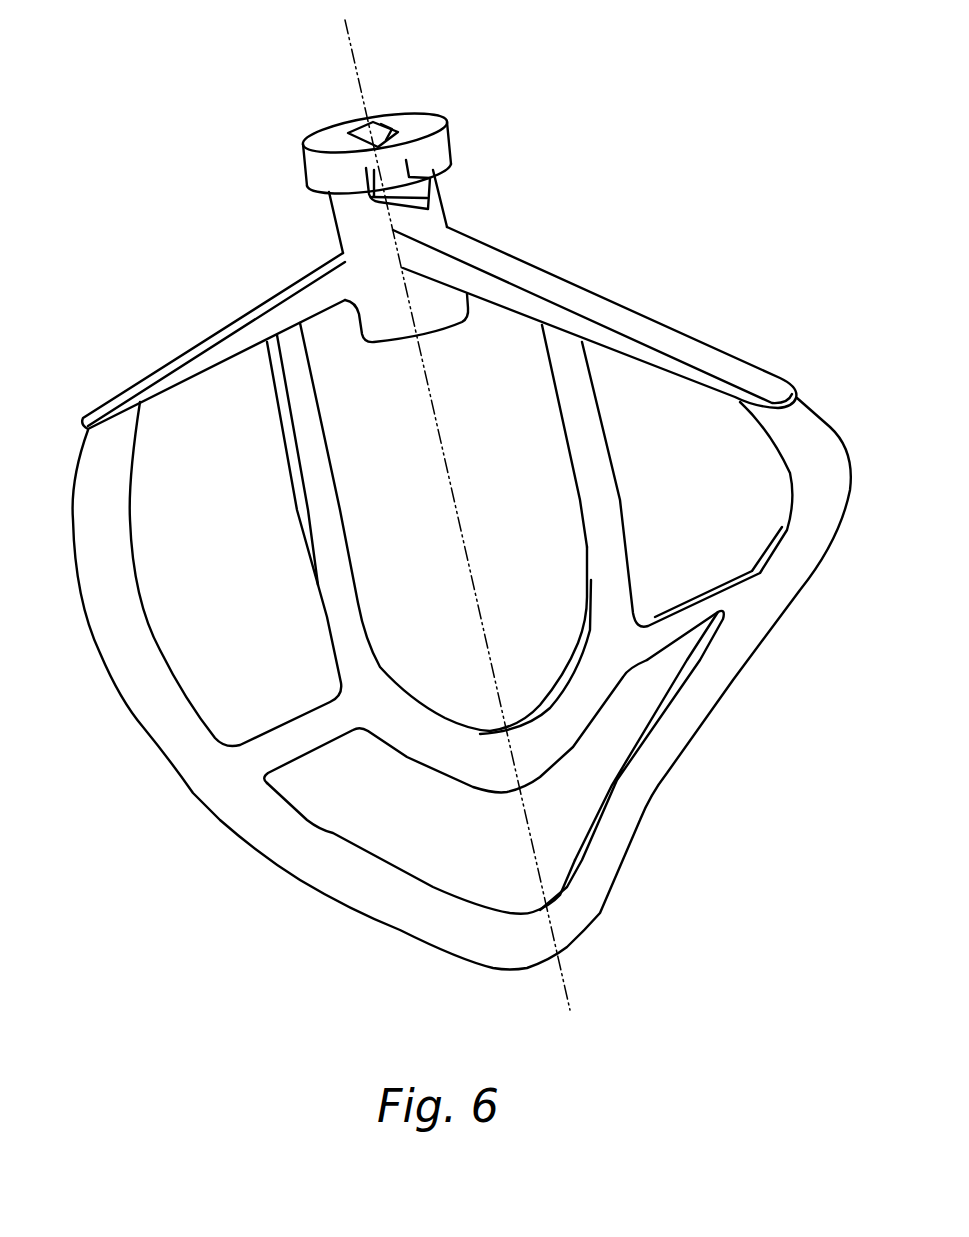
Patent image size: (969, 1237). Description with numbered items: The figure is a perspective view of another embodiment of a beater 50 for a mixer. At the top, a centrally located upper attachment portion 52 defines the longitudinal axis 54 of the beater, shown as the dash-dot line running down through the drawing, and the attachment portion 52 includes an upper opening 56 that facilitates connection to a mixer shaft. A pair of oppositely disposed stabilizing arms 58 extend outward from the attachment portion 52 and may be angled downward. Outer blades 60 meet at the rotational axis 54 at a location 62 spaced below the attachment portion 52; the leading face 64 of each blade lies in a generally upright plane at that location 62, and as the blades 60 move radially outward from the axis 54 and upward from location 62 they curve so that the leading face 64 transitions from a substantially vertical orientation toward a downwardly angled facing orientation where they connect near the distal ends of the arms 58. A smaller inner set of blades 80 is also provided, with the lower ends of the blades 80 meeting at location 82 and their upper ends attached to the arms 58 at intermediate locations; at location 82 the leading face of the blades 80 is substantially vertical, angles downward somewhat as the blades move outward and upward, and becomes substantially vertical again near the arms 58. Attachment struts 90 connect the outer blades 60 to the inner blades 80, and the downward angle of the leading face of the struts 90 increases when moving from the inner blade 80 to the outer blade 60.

The beater 50 is at (655, 162).
The upper attachment portion 52 is at (350, 230).
The longitudinal axis 54 is at (353, 52).
The upper opening 56 is at (383, 130).
The stabilizing arms 58 is at (178, 362).
The outer blades 60 is at (737, 630).
The location 62 is at (570, 923).
The leading face 64 is at (673, 738).
The inner blades 80 is at (323, 538).
The location 82 is at (526, 753).
The attachment struts 90 is at (695, 620).